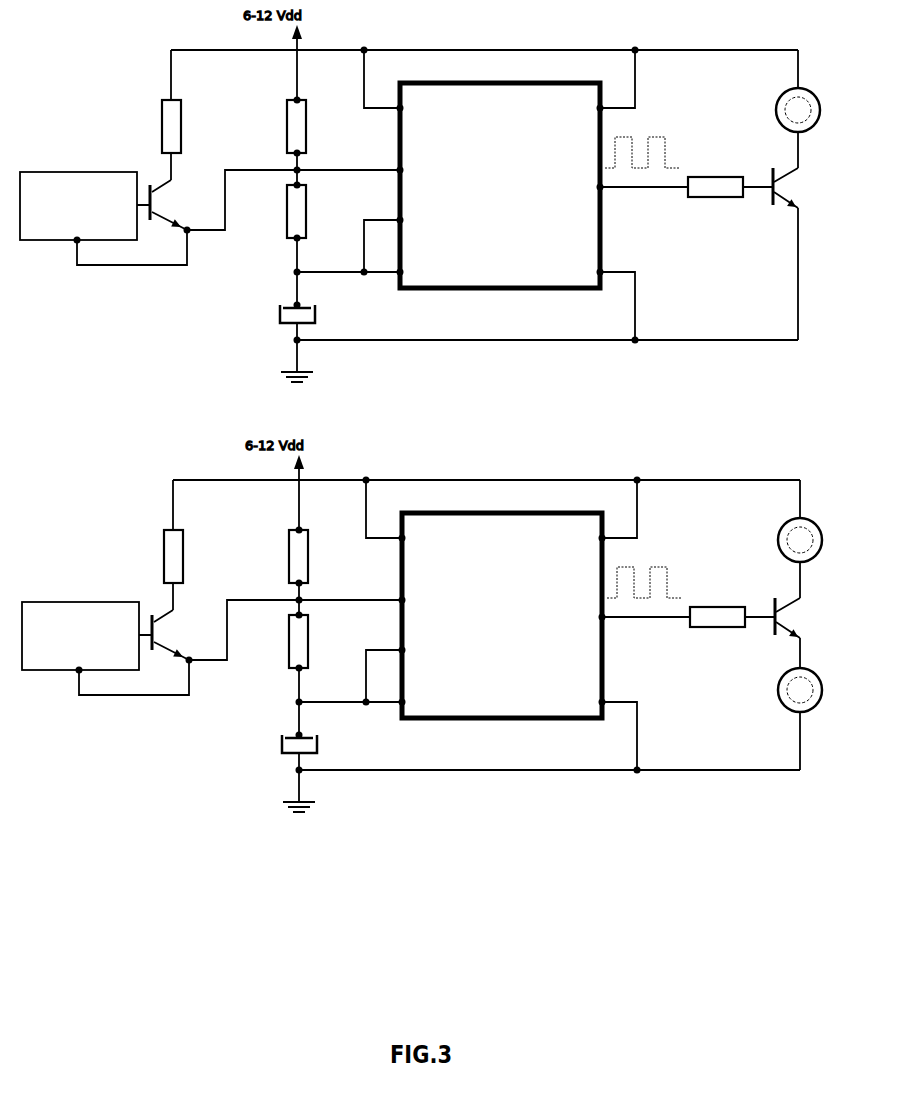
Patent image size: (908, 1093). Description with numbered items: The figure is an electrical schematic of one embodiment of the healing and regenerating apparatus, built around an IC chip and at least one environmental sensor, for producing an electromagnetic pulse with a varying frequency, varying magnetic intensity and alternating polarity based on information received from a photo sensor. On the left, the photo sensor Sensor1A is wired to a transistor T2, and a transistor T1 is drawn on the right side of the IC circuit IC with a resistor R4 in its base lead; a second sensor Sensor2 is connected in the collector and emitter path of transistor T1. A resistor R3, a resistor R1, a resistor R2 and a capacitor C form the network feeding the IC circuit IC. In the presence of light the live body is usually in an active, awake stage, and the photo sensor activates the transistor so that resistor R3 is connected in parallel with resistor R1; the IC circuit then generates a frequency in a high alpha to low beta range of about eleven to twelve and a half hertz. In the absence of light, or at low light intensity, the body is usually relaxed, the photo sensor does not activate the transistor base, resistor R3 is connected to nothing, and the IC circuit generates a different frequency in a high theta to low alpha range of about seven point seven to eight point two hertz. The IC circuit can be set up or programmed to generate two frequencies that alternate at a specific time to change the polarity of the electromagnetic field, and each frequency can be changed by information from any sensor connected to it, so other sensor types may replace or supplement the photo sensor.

The resistor R1 is at (282, 341).
The resistor R2 is at (282, 426).
The resistor R3 is at (155, 341).
The resistor R4 is at (716, 389).
The capacitor C is at (278, 529).
The transistor T1 is at (815, 403).
The transistor T2 is at (163, 427).
The IC circuit IC is at (501, 400).
The photo sensor Sensor1A is at (79, 421).
The environmental sensor Sensor2 is at (828, 400).